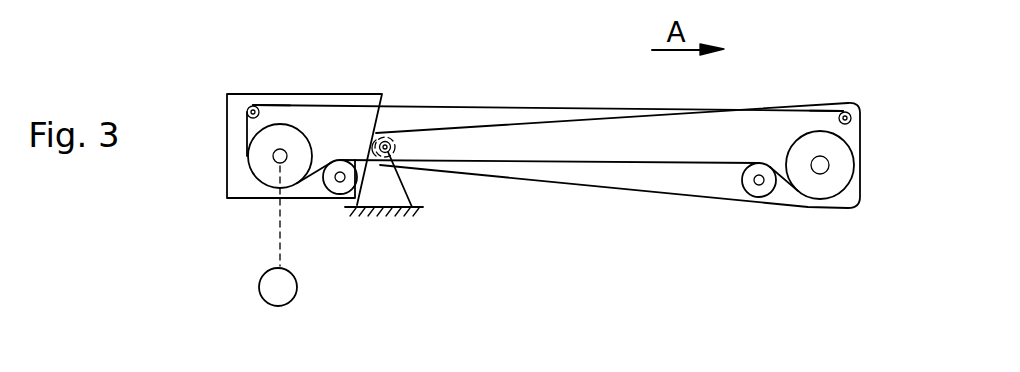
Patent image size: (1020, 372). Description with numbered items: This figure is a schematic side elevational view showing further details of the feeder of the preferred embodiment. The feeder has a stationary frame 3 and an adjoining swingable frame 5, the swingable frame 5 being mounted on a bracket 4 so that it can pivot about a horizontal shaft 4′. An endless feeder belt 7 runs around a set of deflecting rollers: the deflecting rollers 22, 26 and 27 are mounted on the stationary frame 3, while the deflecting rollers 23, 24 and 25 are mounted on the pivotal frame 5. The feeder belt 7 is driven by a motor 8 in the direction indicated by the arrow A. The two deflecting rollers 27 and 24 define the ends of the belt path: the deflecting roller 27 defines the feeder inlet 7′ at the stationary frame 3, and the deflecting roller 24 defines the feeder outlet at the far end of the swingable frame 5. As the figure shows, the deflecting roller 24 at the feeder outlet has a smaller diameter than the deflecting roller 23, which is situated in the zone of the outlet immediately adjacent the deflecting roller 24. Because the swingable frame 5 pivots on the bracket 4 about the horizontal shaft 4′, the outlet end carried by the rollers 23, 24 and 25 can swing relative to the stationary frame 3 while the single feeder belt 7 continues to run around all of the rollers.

The stationary frame 3 is at (236, 139).
The deflecting roller 27 is at (253, 105).
The deflecting roller 22 is at (267, 172).
The deflecting roller 26 is at (331, 183).
The horizontal shaft 4′ is at (388, 140).
The bracket 4 is at (380, 178).
The feeder belt 7 is at (527, 106).
The feeder inlet 7′ is at (262, 97).
The deflecting roller 24 is at (851, 111).
The swingable frame 5 is at (661, 186).
The deflecting roller 25 is at (767, 191).
The deflecting roller 23 is at (833, 186).
The motor 8 is at (266, 304).